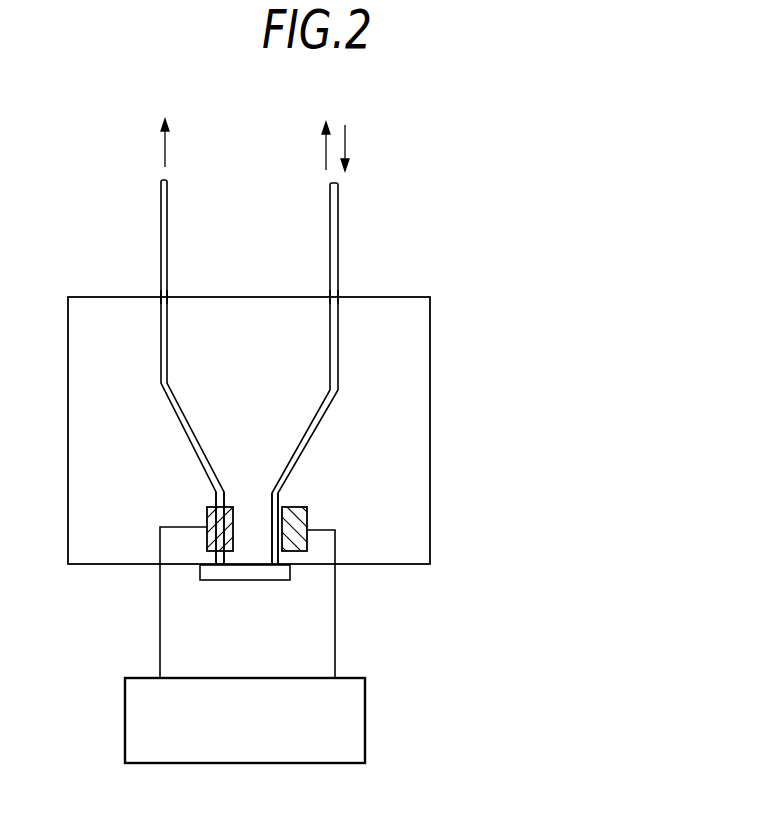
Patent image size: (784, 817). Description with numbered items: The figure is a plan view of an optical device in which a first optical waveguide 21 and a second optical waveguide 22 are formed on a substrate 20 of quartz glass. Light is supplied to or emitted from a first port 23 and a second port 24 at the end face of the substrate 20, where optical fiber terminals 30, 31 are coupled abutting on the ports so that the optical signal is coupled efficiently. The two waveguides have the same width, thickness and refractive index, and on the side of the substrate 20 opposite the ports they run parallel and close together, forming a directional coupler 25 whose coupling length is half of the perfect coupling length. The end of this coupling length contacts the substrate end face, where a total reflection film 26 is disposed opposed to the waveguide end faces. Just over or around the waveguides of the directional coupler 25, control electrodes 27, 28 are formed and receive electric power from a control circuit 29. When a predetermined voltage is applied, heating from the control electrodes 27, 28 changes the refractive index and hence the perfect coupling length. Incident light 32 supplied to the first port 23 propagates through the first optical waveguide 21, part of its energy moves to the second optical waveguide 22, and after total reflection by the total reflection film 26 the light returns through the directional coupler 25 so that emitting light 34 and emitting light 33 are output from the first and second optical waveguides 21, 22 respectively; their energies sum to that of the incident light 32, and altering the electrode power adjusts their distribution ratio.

The substrate 20 is at (395, 297).
The first optical waveguide 21 is at (338, 380).
The second optical waveguide 22 is at (167, 383).
The first port 23 is at (341, 296).
The second port 24 is at (168, 296).
The directional coupler 25 is at (244, 553).
The total reflection film 26 is at (278, 580).
The control electrode 27 is at (297, 508).
The control electrode 28 is at (229, 507).
The control circuit 29 is at (365, 735).
The optical fiber terminal 30 is at (340, 220).
The optical fiber terminal 31 is at (168, 227).
The incident light 32 is at (346, 143).
The emitting light 33 is at (163, 145).
The emitting light 34 is at (326, 148).